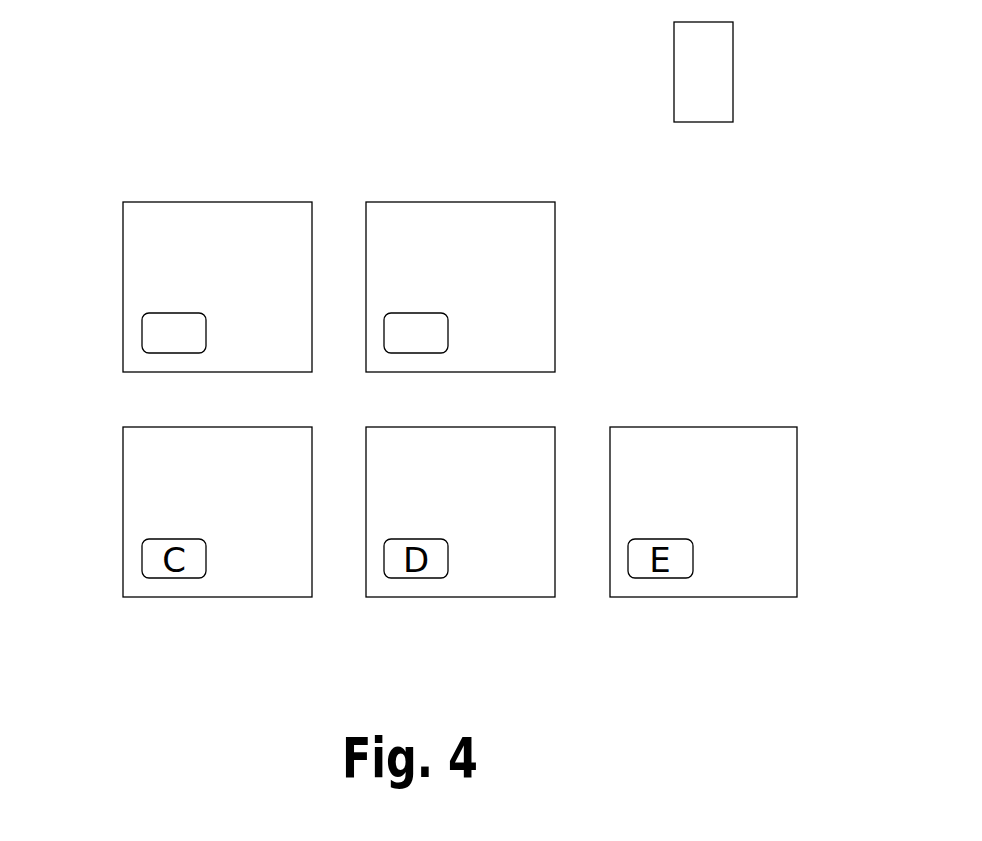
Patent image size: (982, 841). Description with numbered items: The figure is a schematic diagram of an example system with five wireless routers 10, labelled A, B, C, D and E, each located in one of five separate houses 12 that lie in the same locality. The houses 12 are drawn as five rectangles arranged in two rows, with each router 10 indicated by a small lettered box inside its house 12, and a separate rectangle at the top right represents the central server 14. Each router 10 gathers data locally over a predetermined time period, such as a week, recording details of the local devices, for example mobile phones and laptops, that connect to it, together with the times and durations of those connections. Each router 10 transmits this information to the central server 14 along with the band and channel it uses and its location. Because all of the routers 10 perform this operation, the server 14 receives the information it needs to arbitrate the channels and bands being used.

The wireless router 10 is at (142, 335).
The house 12 is at (556, 271).
The central server 14 is at (733, 60).